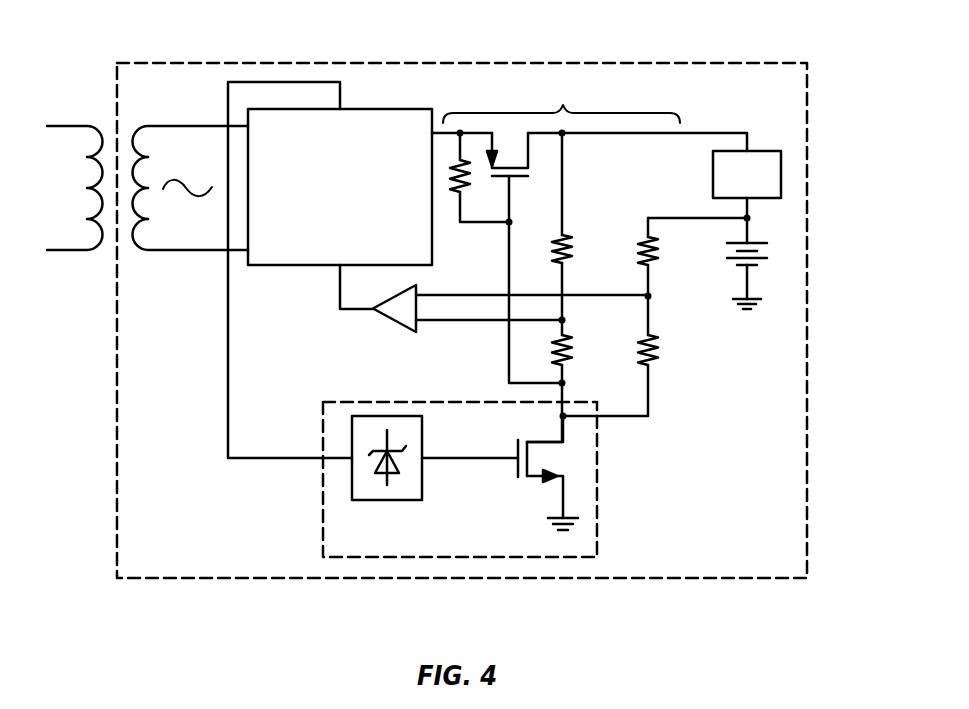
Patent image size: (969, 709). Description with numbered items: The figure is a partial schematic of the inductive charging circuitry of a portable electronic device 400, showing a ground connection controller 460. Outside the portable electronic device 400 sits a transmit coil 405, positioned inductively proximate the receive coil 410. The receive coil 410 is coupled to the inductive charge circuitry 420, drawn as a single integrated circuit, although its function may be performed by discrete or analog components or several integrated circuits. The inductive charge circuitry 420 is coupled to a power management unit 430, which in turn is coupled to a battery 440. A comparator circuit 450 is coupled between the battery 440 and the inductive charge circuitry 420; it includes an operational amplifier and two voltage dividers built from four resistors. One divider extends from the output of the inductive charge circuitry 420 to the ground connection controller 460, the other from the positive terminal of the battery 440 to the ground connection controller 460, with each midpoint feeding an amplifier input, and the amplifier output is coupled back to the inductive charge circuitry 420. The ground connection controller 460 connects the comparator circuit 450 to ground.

The portable electronic device 400 is at (287, 63).
The transmit coil 405 is at (70, 125).
The receive coil 410 is at (167, 127).
The inductive charge circuitry 420 is at (400, 108).
The power management unit 430 is at (781, 175).
The battery 440 is at (762, 300).
The comparator circuit 450 is at (563, 106).
The ground connection controller 460 is at (473, 557).